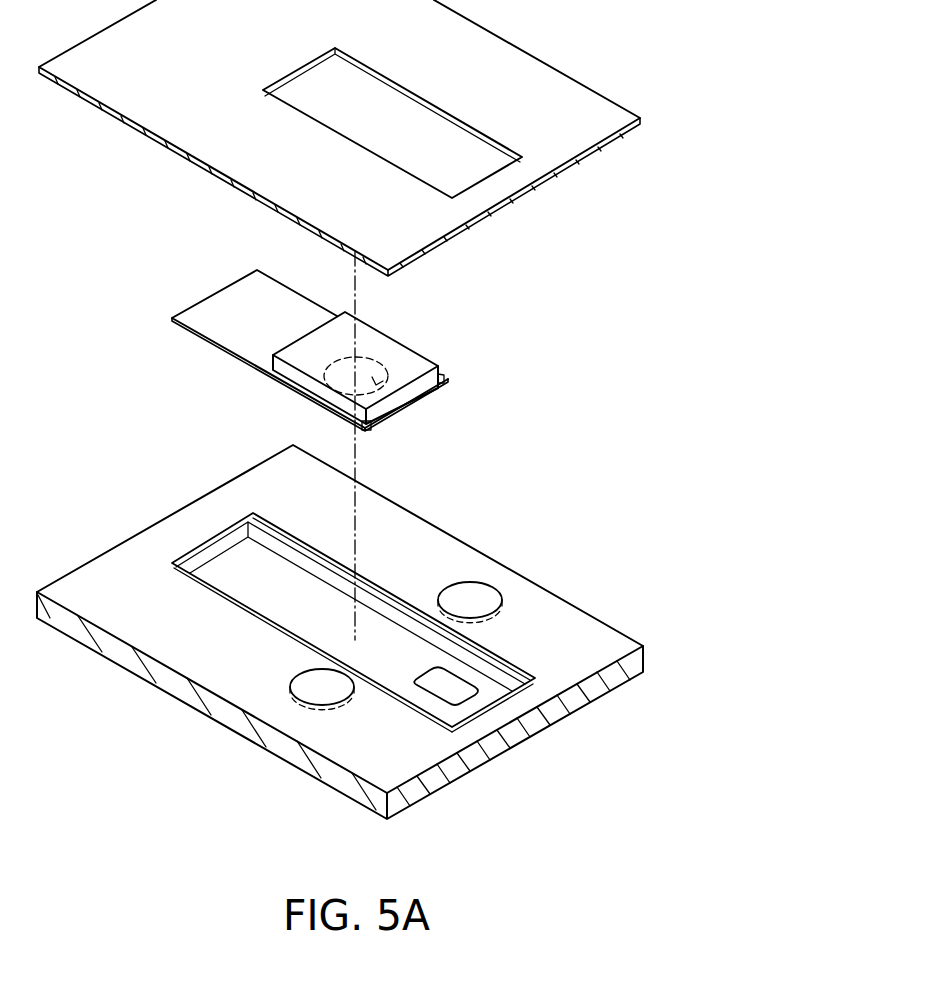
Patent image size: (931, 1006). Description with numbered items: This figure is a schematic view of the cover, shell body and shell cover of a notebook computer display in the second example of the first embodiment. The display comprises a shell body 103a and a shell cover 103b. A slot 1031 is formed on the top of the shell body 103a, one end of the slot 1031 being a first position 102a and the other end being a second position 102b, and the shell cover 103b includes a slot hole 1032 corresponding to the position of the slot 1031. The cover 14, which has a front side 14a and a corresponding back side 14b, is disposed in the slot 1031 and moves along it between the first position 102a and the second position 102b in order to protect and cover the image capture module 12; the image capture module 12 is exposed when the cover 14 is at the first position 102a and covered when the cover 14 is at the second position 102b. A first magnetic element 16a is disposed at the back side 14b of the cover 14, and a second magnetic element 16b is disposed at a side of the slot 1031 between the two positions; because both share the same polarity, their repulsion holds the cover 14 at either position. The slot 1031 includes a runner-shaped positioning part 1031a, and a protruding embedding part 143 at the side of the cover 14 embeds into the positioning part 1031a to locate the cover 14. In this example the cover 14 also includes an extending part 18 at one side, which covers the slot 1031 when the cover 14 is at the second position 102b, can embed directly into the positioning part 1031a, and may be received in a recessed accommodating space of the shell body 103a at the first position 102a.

The shell cover 103b is at (543, 62).
The slot hole 1032 is at (487, 163).
The extending part 18 is at (235, 300).
The cover 14 is at (392, 385).
The front side 14a is at (380, 347).
The back side 14b is at (388, 425).
The embedding part 143 is at (366, 430).
The first magnetic element 16a is at (410, 402).
The second magnetic element 16b is at (480, 595).
The shell body 103a is at (95, 557).
The slot 1031 is at (395, 687).
The positioning part 1031a is at (498, 663).
The first position 102a is at (240, 603).
The second position 102b is at (400, 698).
The image capture module 12 is at (460, 690).